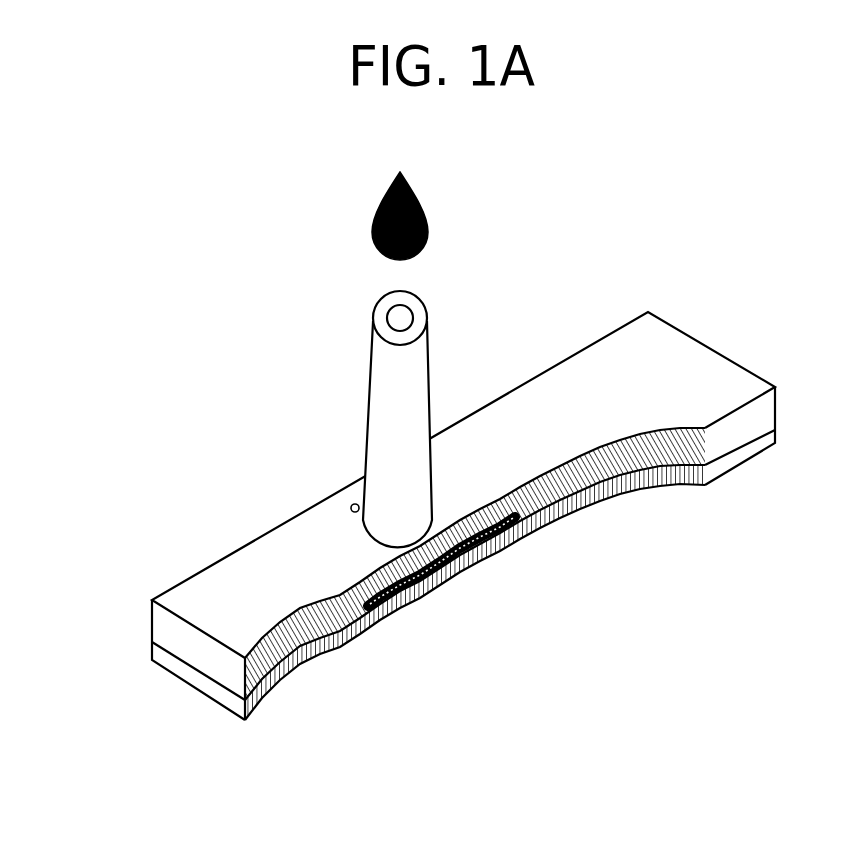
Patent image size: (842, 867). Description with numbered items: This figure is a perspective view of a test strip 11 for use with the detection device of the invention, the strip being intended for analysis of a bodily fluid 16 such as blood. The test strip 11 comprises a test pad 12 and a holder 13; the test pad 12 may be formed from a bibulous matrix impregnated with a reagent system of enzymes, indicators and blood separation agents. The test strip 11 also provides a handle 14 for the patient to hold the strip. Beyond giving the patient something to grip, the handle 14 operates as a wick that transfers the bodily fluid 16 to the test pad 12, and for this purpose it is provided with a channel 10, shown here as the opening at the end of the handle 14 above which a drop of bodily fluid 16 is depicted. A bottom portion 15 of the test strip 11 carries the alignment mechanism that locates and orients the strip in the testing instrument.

The channel 10 is at (410, 318).
The test strip 11 is at (283, 540).
The test pad 12 is at (448, 573).
The holder 13 is at (412, 593).
The handle 14 is at (428, 362).
The bottom portion 15 is at (637, 488).
The bodily fluid 16 is at (372, 225).